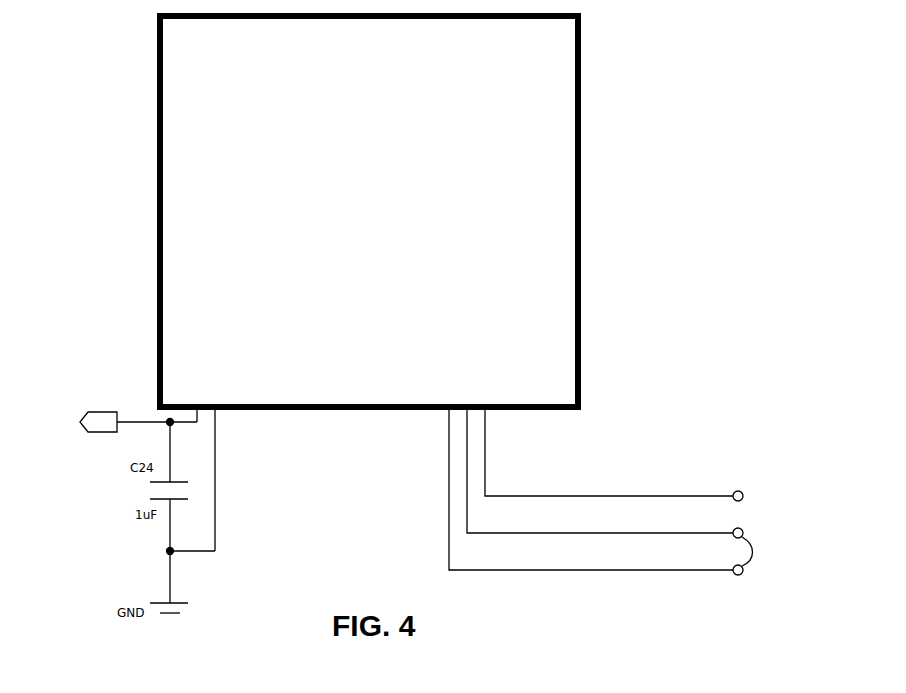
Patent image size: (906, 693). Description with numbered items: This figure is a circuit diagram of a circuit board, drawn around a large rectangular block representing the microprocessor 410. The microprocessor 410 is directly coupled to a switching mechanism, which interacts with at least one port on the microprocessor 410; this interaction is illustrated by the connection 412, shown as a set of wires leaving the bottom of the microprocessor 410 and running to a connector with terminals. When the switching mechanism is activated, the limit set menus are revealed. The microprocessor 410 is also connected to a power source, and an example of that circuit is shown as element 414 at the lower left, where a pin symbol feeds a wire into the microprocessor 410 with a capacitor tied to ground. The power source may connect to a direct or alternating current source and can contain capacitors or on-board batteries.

The microprocessor 410 is at (537, 199).
The connection 412 is at (448, 463).
The power source circuit 414 is at (102, 409).